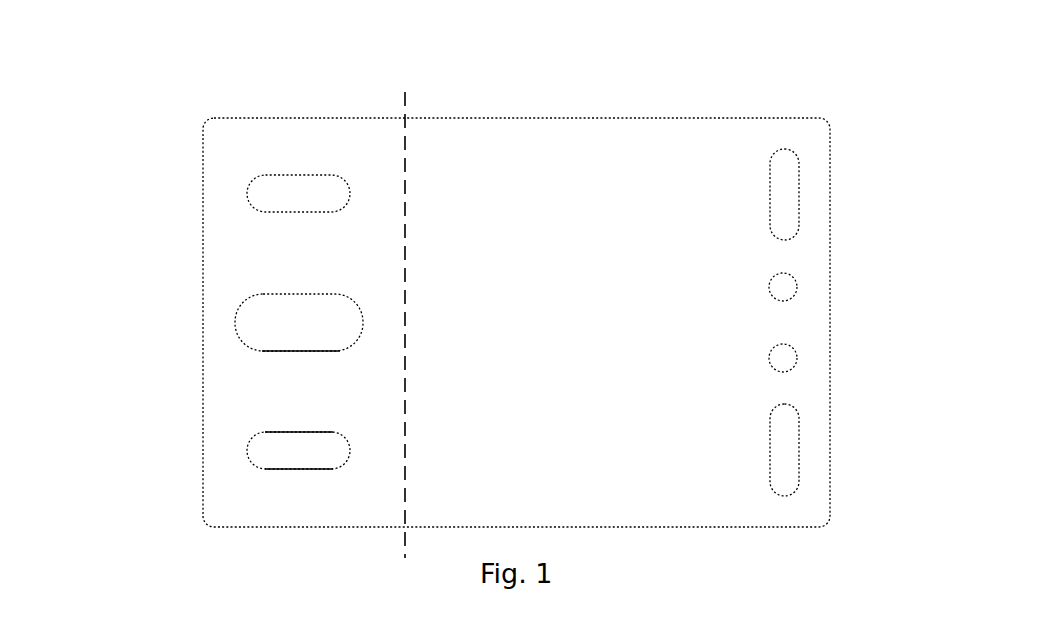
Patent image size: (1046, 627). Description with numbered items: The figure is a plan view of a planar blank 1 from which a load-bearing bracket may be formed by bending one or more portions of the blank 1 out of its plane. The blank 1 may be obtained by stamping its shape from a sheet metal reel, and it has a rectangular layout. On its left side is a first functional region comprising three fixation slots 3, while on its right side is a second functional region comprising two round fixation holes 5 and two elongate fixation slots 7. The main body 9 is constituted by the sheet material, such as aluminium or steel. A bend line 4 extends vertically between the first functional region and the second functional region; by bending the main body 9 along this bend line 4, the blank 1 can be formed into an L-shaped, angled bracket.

The planar blank 1 is at (118, 58).
The fixation slots 3 is at (247, 190).
The bend line 4 is at (405, 103).
The round fixation holes 5 is at (795, 290).
The elongate fixation slots 7 is at (789, 190).
The main body 9 is at (582, 178).